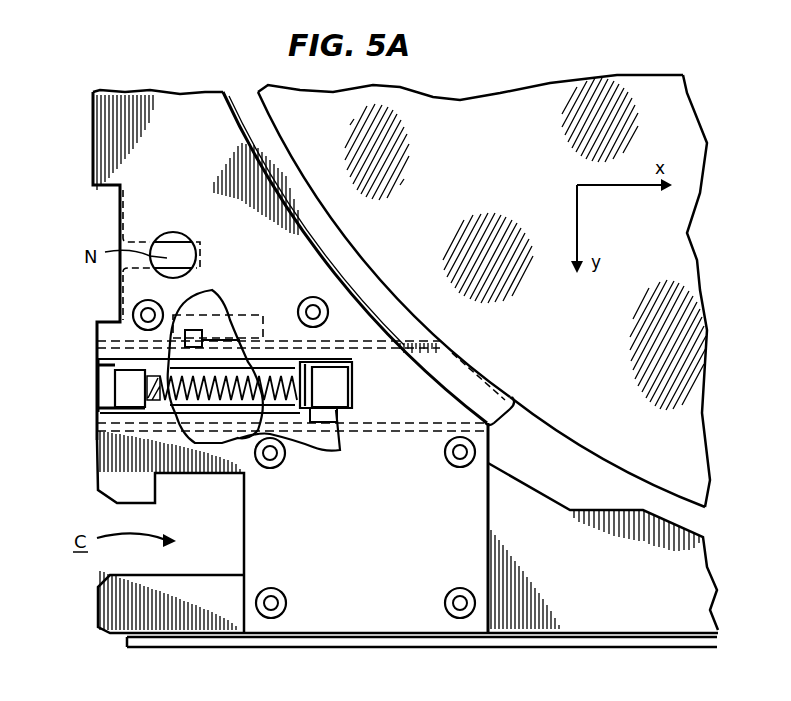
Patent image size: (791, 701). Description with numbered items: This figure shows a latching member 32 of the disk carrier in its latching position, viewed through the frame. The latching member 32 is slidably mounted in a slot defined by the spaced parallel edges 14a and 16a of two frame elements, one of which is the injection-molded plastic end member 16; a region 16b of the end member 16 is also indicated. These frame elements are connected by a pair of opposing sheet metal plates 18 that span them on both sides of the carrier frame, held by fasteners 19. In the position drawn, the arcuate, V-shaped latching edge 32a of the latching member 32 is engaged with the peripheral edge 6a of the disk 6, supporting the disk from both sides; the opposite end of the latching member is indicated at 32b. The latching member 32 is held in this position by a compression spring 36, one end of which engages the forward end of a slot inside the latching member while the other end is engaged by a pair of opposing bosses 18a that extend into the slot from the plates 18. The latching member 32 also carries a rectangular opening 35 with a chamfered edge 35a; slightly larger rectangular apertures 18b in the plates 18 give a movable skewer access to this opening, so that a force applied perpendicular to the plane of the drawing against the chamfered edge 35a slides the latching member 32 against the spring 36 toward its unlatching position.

The disk 6 is at (478, 138).
The peripheral edge of disk 6a is at (580, 452).
The edge of frame element 14a is at (418, 431).
The end member 16 is at (93, 186).
The edge of frame element 16a is at (287, 337).
The recess in holder block 16b is at (210, 300).
The sheet metal plates 18 is at (256, 542).
The bosses 18a is at (133, 387).
The rectangular apertures 18b is at (323, 360).
The fasteners 19 is at (274, 590).
The latching member 32 is at (427, 343).
The latching edge 32a is at (477, 360).
The blade rear end 32b is at (98, 370).
The rectangular opening 35 is at (334, 385).
The chamfered edge 35a is at (313, 423).
The compression spring 36 is at (205, 404).